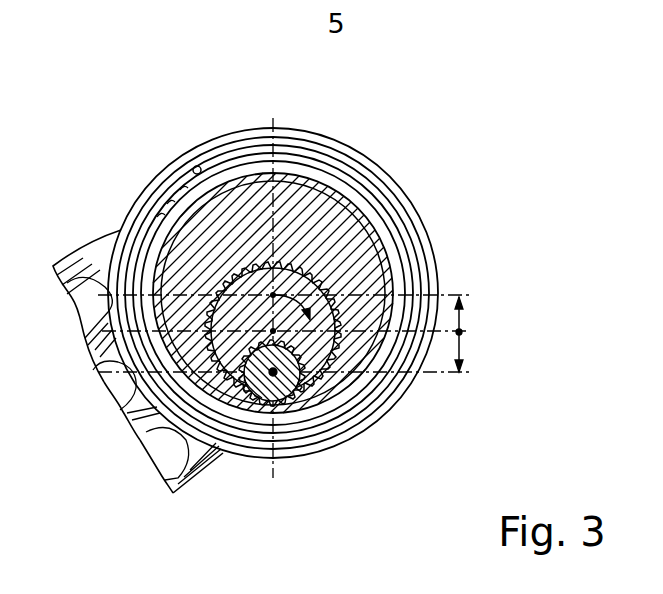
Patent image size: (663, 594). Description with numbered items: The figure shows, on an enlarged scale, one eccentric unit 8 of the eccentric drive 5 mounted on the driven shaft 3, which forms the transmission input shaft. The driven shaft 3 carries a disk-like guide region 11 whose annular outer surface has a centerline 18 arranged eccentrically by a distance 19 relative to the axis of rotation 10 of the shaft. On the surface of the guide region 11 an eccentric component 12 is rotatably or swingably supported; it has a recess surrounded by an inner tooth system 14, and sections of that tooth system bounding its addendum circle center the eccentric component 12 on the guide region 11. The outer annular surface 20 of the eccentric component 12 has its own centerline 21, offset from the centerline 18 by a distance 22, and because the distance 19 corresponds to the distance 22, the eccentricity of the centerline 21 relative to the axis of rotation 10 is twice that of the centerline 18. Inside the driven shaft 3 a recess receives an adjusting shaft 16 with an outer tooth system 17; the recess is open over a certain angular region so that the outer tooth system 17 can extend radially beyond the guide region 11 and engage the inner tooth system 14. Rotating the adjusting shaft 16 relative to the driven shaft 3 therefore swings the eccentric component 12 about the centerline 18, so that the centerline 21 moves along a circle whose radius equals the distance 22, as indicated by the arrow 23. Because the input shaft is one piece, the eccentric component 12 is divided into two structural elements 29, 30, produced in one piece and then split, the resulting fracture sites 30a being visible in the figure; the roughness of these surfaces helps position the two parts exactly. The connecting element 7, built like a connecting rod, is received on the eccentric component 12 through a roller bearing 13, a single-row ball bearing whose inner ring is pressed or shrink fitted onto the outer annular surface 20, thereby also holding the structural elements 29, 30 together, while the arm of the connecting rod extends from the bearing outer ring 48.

The eccentric drive 5 is at (306, 110).
The eccentric unit 8 is at (405, 172).
The driven shaft 3 is at (355, 210).
The bearing outer ring 48 is at (388, 216).
The outer annular surface 20 is at (378, 231).
The arrow 23 is at (372, 272).
The structural element 29 is at (298, 195).
The guide region 11 is at (338, 205).
The eccentric component 12 is at (195, 250).
The inner tooth system 14 is at (263, 268).
The adjusting shaft 16 is at (313, 405).
The structural element 30 is at (327, 392).
The axis of rotation 10 is at (288, 405).
The outer tooth system 17 is at (232, 395).
The roller bearing 13 is at (201, 162).
The fracture site 30a is at (180, 330).
The centerline 21 is at (212, 355).
The centerline 18 is at (212, 390).
The connecting element 7 is at (188, 488).
The distance 22 is at (462, 323).
The distance 19 is at (462, 342).